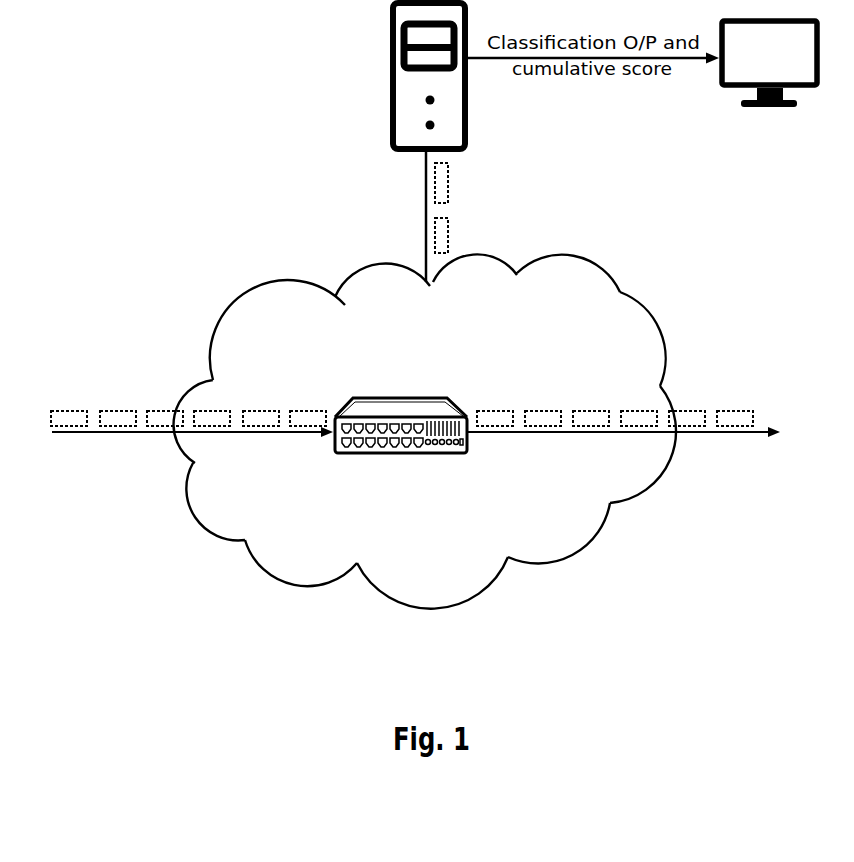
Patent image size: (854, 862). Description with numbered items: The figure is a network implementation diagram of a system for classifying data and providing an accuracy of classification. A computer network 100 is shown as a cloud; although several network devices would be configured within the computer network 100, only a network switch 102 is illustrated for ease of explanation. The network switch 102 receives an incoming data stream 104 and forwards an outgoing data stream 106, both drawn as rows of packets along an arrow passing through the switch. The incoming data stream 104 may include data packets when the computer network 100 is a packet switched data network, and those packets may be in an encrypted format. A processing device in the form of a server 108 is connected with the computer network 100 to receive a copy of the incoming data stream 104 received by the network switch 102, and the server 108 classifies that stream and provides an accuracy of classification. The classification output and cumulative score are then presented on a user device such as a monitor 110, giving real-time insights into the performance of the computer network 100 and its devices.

The computer network 100 is at (620, 292).
The network switch 102 is at (378, 455).
The incoming data stream 104 is at (70, 432).
The outgoing data stream 106 is at (697, 432).
The server 108 is at (468, 123).
The monitor 110 is at (758, 107).